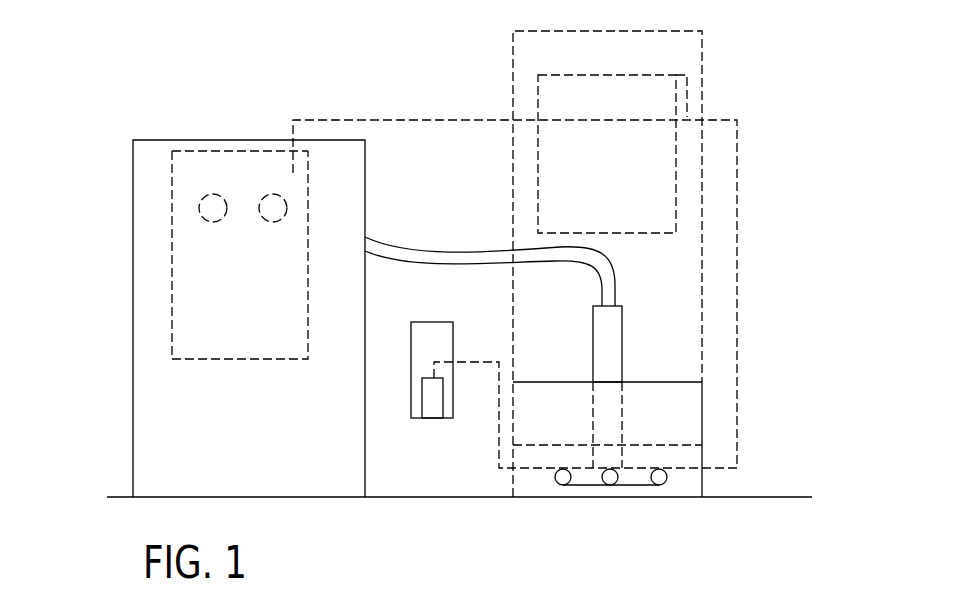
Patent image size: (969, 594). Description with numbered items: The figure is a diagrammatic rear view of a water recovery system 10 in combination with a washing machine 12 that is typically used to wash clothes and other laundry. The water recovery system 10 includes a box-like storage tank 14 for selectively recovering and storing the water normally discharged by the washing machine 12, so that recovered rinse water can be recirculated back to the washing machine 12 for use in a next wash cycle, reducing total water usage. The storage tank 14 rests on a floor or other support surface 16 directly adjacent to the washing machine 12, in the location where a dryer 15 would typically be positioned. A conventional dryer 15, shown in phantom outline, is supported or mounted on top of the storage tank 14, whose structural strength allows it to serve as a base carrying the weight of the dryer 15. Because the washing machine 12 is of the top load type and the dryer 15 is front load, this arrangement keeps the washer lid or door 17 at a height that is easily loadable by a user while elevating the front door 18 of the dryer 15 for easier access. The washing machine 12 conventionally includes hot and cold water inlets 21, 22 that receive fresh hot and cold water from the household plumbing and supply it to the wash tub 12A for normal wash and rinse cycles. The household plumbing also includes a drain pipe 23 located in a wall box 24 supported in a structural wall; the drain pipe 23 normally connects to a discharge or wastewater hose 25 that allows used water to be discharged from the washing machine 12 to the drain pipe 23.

The water recovery system 10 is at (813, 163).
The washing machine 12 is at (155, 415).
The wash tub 12A is at (172, 334).
The storage tank 14 is at (703, 411).
The dryer 15 is at (705, 92).
The floor or support surface 16 is at (785, 497).
The washer lid or door 17 is at (192, 150).
The front door of the dryer 18 is at (657, 193).
The hot water inlet 21 is at (265, 195).
The cold water inlet 22 is at (198, 208).
The drain pipe 23 is at (432, 405).
The wall box 24 is at (410, 406).
The wastewater hose 25 is at (515, 251).